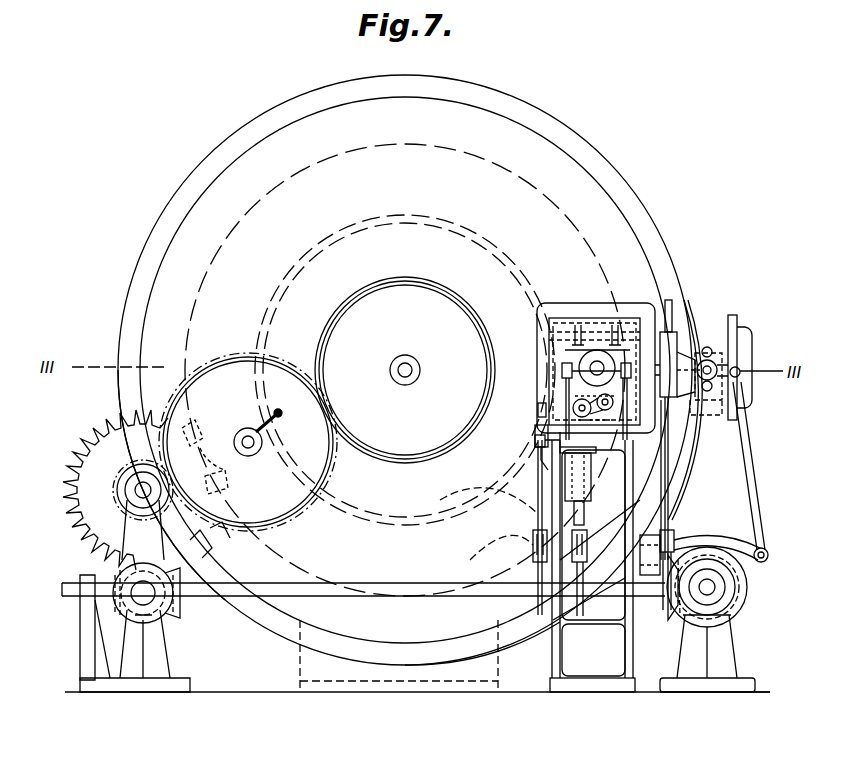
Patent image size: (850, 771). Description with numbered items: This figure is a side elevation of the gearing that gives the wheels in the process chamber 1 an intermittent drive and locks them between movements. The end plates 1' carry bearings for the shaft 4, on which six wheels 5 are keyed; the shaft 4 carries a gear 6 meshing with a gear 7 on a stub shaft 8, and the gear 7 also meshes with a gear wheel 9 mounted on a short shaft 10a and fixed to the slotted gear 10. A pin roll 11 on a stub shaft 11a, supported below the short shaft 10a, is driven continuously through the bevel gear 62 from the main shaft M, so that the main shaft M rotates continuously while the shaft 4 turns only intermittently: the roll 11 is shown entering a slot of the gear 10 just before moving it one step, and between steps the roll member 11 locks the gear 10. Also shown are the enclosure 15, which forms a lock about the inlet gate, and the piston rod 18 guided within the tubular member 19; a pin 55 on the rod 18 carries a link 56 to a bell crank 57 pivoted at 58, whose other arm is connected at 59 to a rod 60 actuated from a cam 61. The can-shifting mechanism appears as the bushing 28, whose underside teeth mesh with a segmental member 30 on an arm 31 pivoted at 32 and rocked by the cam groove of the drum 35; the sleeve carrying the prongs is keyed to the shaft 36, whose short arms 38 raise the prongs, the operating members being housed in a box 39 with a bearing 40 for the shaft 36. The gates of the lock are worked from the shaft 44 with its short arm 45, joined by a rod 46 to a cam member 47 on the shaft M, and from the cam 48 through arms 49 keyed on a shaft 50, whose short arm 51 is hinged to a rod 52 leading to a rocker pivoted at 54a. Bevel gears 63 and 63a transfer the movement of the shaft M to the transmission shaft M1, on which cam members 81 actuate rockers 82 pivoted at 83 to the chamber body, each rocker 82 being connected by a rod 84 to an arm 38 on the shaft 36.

The process chamber 1 is at (405, 359).
The end plates 1' is at (405, 370).
The shaft 4 is at (409, 379).
The wheels 5 is at (352, 226).
The gear 6 is at (358, 297).
The gear 7 is at (232, 353).
The stub shaft 8 is at (258, 432).
The gear wheel 9 is at (116, 497).
The slotted gear 10 is at (126, 437).
The short shaft 10a is at (140, 490).
The pin roll 11 is at (110, 580).
The stub shaft 11a is at (143, 633).
The enclosure 15 is at (561, 313).
The piston rod 18 is at (562, 372).
The tubular member 19 is at (598, 352).
The bushing 28 is at (702, 355).
The segmental member 30 is at (710, 405).
The arm 31 is at (683, 491).
The pivot 32 is at (676, 538).
The drum 35 is at (730, 594).
The rod 36 is at (716, 362).
The short arms 38 is at (735, 330).
The box 39 is at (750, 340).
The bearing 40 is at (708, 348).
The shaft 44 is at (576, 405).
The short arm 45 is at (585, 412).
The rod 46 is at (584, 522).
The cam member 47 is at (581, 602).
The cam 48 is at (678, 618).
The duplicate arms 49 is at (579, 325).
The shaft 50 is at (665, 330).
The short arm 51 is at (668, 345).
The rod 52 is at (670, 462).
The pivot 54a is at (660, 605).
The pin 55 is at (617, 325).
The link 56 is at (565, 355).
The bell crank 57 is at (630, 428).
The pivot 58 is at (560, 462).
The connection 59 is at (538, 430).
The rod 60 is at (537, 513).
The cam 61 is at (533, 546).
The bevel gear 62 is at (165, 598).
The bevel gear 63 is at (684, 614).
The bevel gear 63a is at (732, 600).
The cam members 81 is at (717, 608).
The rocker 82 is at (730, 546).
The pivot 83 is at (626, 578).
The rod 84 is at (749, 459).
The main shaft M is at (204, 598).
The transmission shaft M1 is at (714, 586).